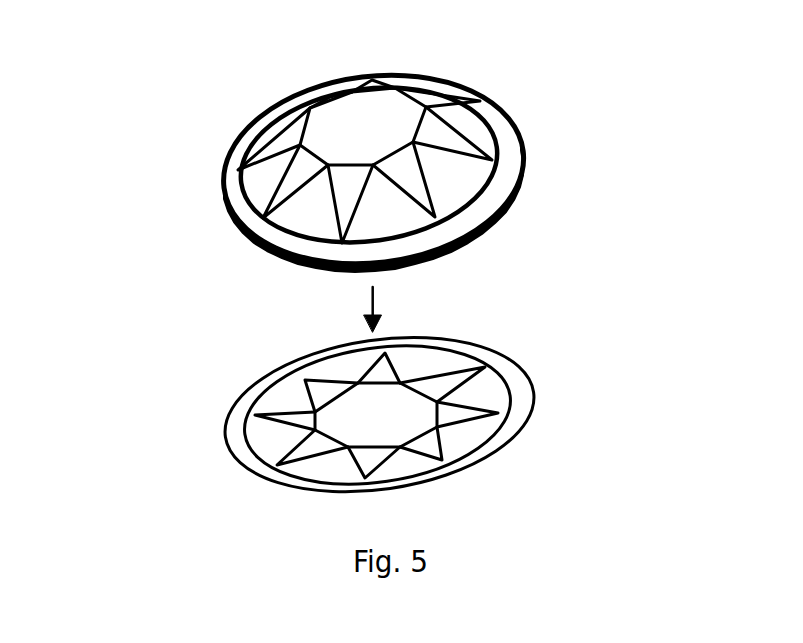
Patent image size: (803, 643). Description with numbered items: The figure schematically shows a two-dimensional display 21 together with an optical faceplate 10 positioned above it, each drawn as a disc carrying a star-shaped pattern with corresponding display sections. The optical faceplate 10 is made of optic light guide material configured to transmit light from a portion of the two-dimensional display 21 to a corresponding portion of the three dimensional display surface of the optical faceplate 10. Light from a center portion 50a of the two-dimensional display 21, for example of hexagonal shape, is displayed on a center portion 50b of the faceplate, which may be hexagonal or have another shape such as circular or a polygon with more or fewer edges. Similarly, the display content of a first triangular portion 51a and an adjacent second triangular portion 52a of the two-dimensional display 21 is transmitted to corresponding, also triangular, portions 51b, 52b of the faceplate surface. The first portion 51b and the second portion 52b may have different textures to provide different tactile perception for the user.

The optical faceplate 10 is at (210, 63).
The 2D display 21 is at (182, 418).
The center portion of the 2D display 50a is at (378, 402).
The center portion of the three dimensional display surface 50b is at (370, 117).
The first triangular portion 51a is at (275, 437).
The first portion of the three dimensional display surface 51b is at (258, 182).
The second triangular portion 52a is at (312, 447).
The second portion of the three dimensional display surface 52b is at (305, 170).